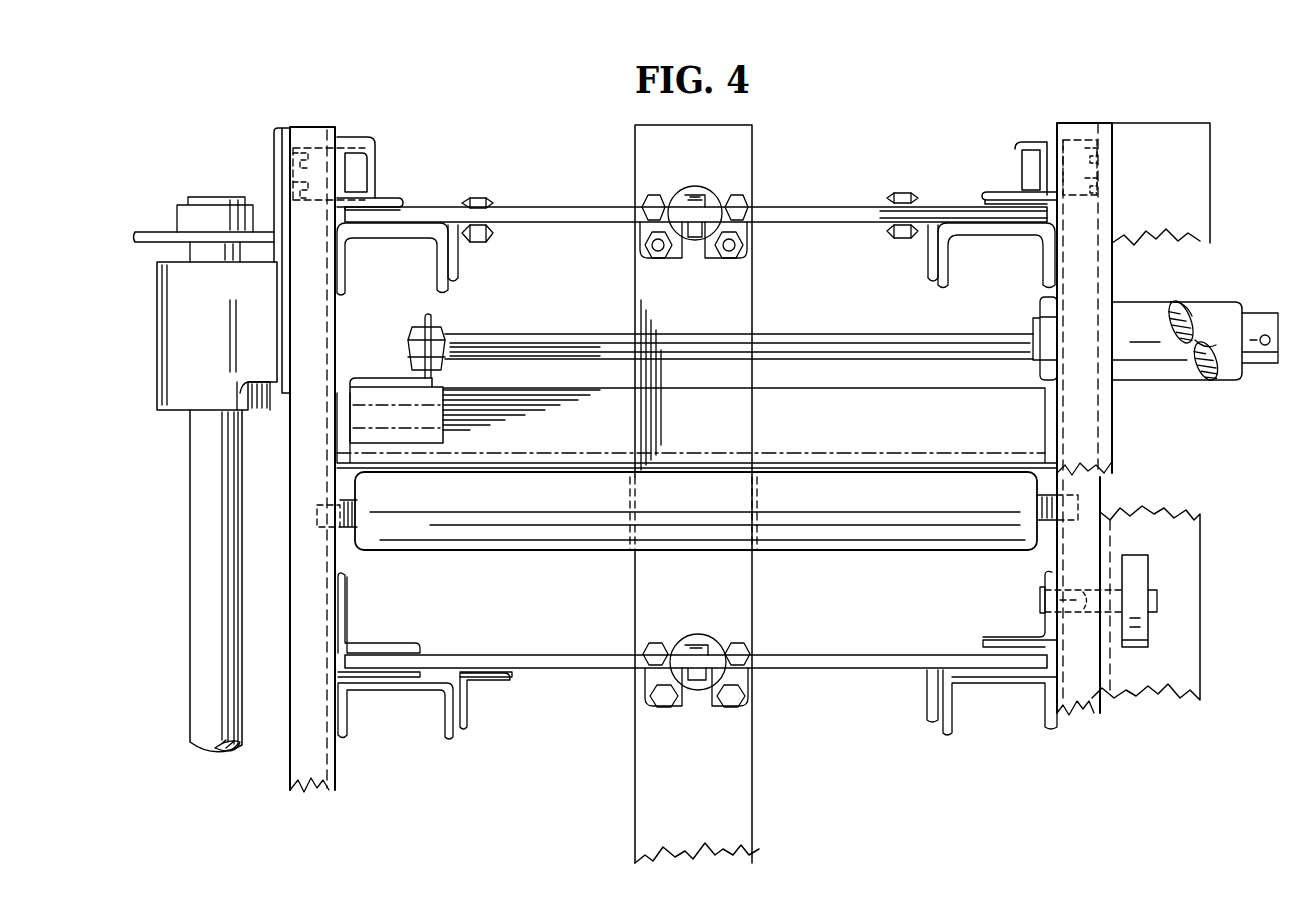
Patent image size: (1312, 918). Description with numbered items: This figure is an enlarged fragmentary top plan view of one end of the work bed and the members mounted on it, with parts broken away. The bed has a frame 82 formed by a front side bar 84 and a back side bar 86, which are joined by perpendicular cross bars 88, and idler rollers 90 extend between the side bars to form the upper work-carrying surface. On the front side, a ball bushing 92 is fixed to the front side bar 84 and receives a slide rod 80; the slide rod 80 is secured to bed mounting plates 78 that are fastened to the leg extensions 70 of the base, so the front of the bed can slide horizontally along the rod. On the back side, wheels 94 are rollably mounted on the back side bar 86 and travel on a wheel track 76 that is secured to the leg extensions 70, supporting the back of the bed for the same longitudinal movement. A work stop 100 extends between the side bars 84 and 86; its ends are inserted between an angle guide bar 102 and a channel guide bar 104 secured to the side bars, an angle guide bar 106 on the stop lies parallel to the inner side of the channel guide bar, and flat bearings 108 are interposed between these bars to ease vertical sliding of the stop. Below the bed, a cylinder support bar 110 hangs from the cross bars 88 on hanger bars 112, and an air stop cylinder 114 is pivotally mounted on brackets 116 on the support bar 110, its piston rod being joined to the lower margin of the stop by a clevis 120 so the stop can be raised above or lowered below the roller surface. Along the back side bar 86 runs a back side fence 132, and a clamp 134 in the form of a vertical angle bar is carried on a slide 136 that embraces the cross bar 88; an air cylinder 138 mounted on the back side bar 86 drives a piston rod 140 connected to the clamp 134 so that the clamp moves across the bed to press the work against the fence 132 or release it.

The leg extensions 70 is at (375, 158).
The wheel track 76 is at (1210, 222).
The bed mounting plates 78 is at (160, 232).
The slide rod 80 is at (200, 612).
The frame 82 is at (270, 660).
The front side bar 84 is at (313, 780).
The back side bar 86 is at (1083, 705).
The cross bars 88 is at (948, 397).
The idler rollers 90 is at (855, 545).
The ball bushings 92 is at (175, 352).
The wheels 94 is at (1137, 560).
The work stops 100 is at (782, 213).
The angle guide bars 102 is at (397, 200).
The channel guide bars 104 is at (385, 238).
The angle guide bars 106 is at (458, 257).
The flat bearings 108 is at (1010, 205).
The cylinder support bar 110 is at (747, 160).
The hanger bars 112 is at (630, 497).
The air stop cylinders 114 is at (710, 176).
The brackets 116 is at (645, 242).
The clevis 120 is at (697, 240).
The back side fence 132 is at (1112, 168).
The clamps 134 is at (430, 318).
The slides 136 is at (435, 415).
The air cylinder 138 is at (1205, 312).
The piston rod 140 is at (525, 338).